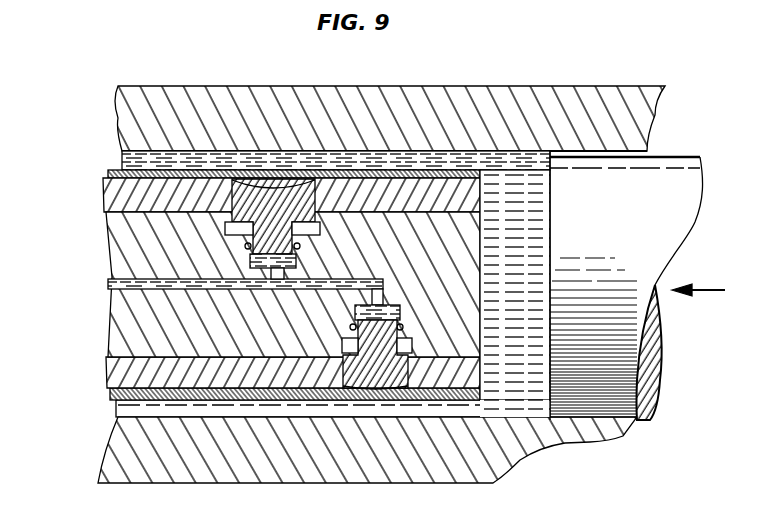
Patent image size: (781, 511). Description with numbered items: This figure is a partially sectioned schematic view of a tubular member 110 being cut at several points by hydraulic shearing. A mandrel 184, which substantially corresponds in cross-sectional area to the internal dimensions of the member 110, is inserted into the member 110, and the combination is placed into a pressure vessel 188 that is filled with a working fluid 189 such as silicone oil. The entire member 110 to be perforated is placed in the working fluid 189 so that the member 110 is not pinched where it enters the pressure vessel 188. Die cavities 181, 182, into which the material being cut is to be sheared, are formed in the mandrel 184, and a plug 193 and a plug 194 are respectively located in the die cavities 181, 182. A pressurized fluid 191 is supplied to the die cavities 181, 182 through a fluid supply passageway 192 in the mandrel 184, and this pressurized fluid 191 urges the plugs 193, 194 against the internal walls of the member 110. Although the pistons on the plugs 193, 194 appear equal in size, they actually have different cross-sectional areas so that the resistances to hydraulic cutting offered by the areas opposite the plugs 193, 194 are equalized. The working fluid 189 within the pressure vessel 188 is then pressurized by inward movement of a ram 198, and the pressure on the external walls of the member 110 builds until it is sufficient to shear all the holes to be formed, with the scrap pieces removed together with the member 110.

The pressure vessel 188 is at (90, 78).
The member 110 is at (112, 167).
The mandrel 184 is at (103, 190).
The pressurized fluid 191 is at (115, 283).
The fluid supply passageway 192 is at (213, 273).
The plug 193 is at (293, 202).
The die cavity 181 is at (312, 197).
The die cavity 182 is at (352, 380).
The plug 194 is at (355, 371).
The working fluid 189 is at (533, 222).
The ram 198 is at (700, 157).